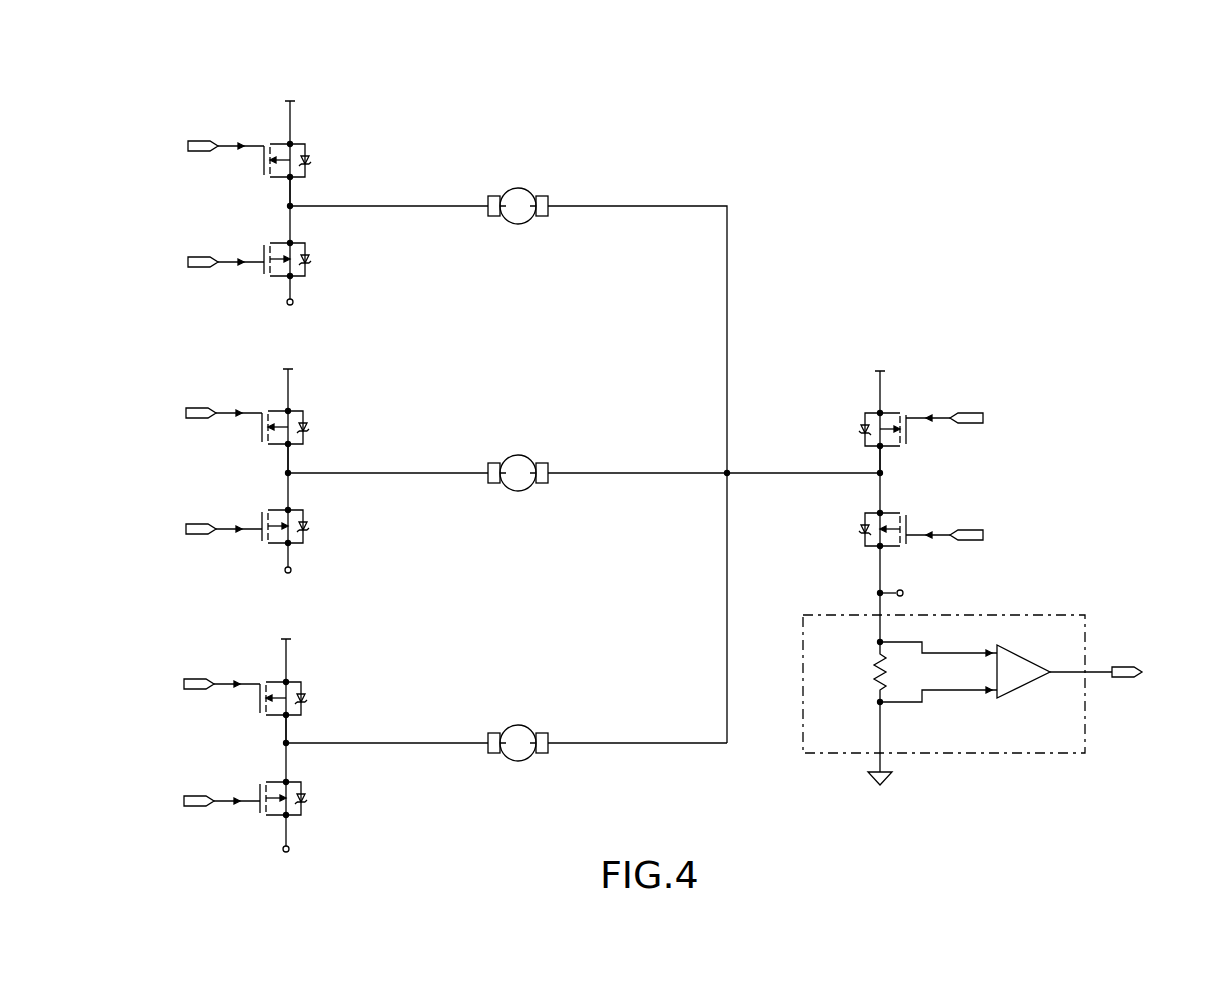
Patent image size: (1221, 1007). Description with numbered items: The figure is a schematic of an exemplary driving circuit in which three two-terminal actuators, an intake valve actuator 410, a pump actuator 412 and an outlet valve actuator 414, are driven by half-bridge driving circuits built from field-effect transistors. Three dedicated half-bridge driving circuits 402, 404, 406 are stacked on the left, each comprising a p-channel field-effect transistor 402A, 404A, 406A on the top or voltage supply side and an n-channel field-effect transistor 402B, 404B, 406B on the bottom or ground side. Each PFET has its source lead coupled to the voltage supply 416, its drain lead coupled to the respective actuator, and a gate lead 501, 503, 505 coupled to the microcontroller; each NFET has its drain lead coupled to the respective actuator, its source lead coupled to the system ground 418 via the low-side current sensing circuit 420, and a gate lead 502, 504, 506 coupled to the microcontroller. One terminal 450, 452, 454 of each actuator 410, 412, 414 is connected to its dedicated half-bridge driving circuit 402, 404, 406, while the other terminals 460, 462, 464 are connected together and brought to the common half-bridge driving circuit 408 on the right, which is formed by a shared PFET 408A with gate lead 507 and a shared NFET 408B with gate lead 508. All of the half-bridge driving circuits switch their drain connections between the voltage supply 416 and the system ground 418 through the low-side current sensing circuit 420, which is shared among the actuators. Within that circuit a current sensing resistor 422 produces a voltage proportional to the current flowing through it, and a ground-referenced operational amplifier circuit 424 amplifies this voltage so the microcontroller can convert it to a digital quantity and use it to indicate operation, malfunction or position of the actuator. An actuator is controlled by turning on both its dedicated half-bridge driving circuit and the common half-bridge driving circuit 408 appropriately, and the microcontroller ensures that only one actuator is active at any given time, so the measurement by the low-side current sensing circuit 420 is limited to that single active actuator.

The dedicated half-bridge driving circuit 402 is at (271, 210).
The p-channel field-effect transistor 402A is at (303, 145).
The n-channel field-effect transistor 402B is at (303, 278).
The dedicated half-bridge driving circuit 404 is at (269, 477).
The p-channel field-effect transistor 404A is at (301, 412).
The n-channel field-effect transistor 404B is at (301, 545).
The dedicated half-bridge driving circuit 406 is at (267, 748).
The p-channel field-effect transistor 406A is at (299, 683).
The n-channel field-effect transistor 406B is at (299, 817).
The common half-bridge driving circuit 408 is at (899, 479).
The p-channel field-effect transistor 408A is at (893, 413).
The n-channel field-effect transistor 408B is at (893, 548).
The intake valve actuator 410 is at (529, 188).
The pump actuator 412 is at (529, 455).
The outlet valve actuator 414 is at (529, 725).
The voltage supply 416 is at (303, 92).
The system ground 418 is at (868, 779).
The low-side current sensing circuit 420 is at (285, 301).
The current sensing resistor 422 is at (868, 681).
The ground-referenced operational amplifier circuit 424 is at (1020, 652).
The actuator terminal 450 is at (340, 206).
The actuator terminal 452 is at (338, 473).
The actuator terminal 454 is at (338, 743).
The actuator terminal 460 is at (625, 206).
The actuator terminal 462 is at (625, 473).
The actuator terminal 464 is at (625, 743).
The gate lead 501 is at (135, 141).
The gate lead 502 is at (135, 259).
The gate lead 503 is at (133, 408).
The gate lead 504 is at (133, 526).
The gate lead 505 is at (131, 679).
The gate lead 506 is at (131, 798).
The gate lead 507 is at (1014, 411).
The gate lead 508 is at (1014, 528).